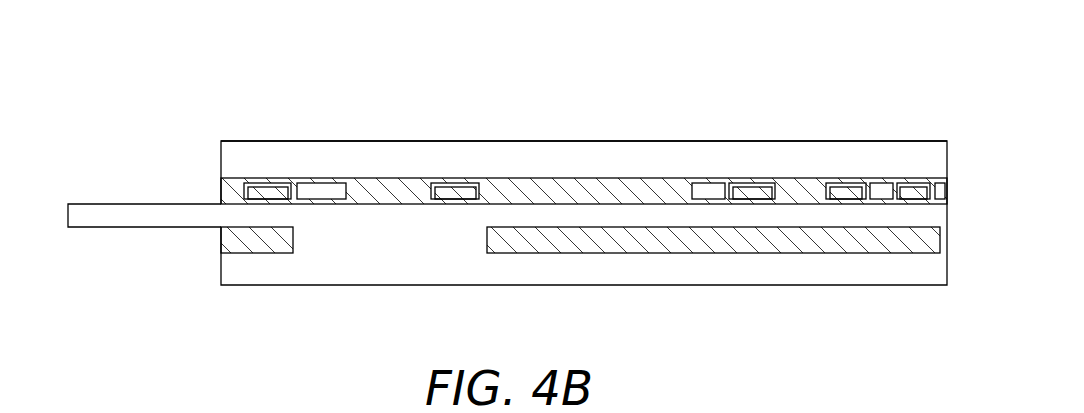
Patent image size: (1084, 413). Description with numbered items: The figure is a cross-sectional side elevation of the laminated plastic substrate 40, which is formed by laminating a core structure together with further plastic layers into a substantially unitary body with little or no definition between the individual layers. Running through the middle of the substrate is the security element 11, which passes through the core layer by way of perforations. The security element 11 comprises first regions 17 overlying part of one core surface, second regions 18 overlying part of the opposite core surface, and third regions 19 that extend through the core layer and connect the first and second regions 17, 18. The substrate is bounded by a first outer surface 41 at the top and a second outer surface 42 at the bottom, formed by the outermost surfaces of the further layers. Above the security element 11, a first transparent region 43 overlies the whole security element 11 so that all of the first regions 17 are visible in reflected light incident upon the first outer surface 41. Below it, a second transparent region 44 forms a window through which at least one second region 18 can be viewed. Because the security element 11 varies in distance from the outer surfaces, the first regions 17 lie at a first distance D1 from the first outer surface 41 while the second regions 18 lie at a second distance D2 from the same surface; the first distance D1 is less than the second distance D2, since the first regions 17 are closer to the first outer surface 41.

The plastic substrate 40 is at (842, 80).
The security element 11 is at (908, 179).
The first region 17 is at (265, 178).
The third region 19 is at (303, 178).
The second region 18 is at (323, 205).
The first outer surface 41 is at (548, 141).
The second outer surface 42 is at (553, 287).
The first transparent region 43 is at (481, 148).
The second transparent region 44 is at (392, 243).
The first distance D1 is at (588, 142).
The second distance D2 is at (710, 198).